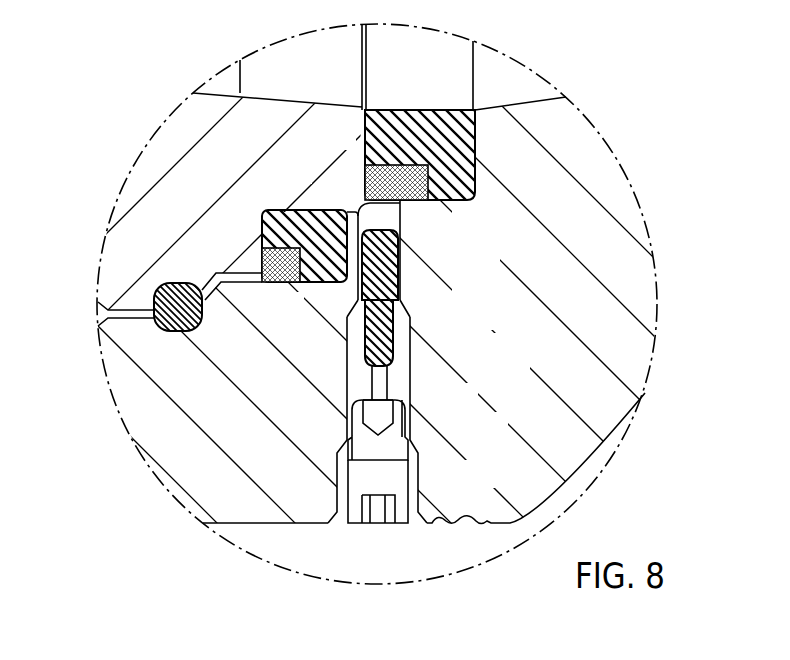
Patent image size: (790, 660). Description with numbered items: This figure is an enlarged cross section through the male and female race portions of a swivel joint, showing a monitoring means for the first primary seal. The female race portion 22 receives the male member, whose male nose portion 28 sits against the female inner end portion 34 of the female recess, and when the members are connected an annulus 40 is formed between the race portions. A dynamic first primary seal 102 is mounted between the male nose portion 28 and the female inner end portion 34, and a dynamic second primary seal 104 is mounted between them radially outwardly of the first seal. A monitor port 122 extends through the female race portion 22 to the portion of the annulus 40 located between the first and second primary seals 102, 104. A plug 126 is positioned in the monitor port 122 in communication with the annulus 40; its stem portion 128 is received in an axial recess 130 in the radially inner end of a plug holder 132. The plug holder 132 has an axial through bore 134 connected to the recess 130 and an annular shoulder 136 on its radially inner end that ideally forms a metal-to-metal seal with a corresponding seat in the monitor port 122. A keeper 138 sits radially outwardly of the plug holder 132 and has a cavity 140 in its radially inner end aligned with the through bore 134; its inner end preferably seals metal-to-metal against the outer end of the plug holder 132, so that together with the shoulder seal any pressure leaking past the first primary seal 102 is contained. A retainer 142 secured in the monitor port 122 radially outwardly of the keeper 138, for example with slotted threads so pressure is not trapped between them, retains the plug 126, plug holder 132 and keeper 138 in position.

The female race portion 22 is at (655, 216).
The male nose portion 28 is at (218, 184).
The female inner end portion 34 is at (287, 394).
The annulus 40 is at (362, 204).
The first primary seal 102 is at (422, 109).
The second primary seal 104 is at (300, 210).
The monitor port 122 is at (437, 201).
The plug 126 is at (414, 260).
The stem portion 128 is at (394, 324).
The axial recess 130 is at (400, 302).
The plug holder 132 is at (428, 354).
The axial through bore 134 is at (389, 379).
The annular shoulder 136 is at (348, 313).
The keeper 138 is at (426, 428).
The cavity 140 is at (388, 396).
The retainer 142 is at (408, 489).